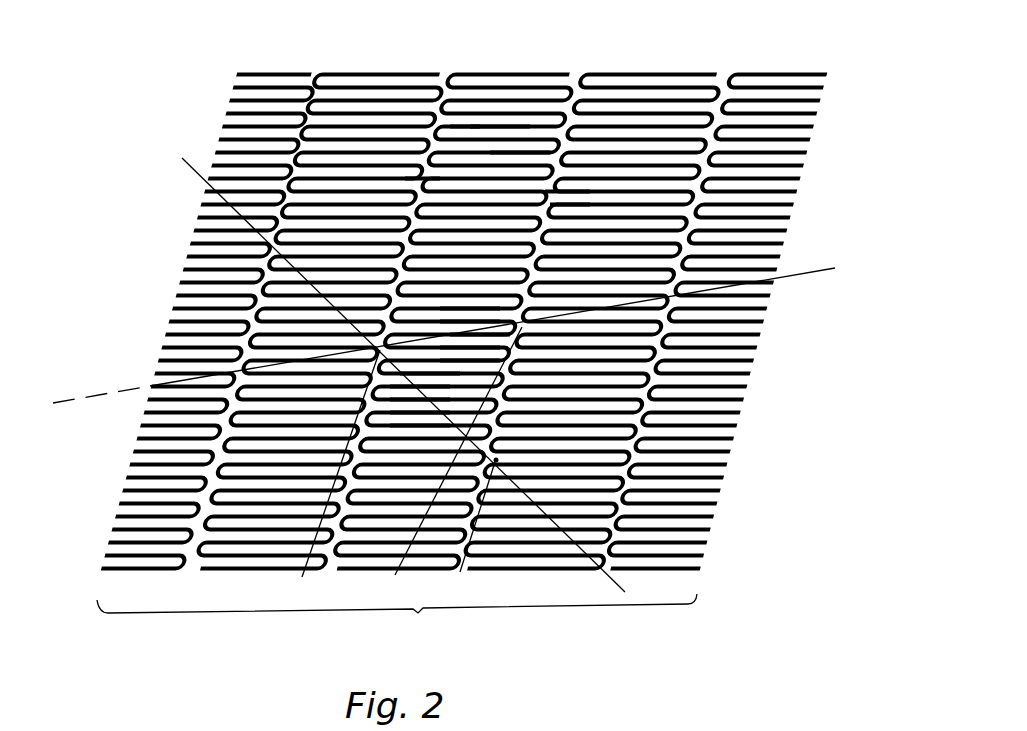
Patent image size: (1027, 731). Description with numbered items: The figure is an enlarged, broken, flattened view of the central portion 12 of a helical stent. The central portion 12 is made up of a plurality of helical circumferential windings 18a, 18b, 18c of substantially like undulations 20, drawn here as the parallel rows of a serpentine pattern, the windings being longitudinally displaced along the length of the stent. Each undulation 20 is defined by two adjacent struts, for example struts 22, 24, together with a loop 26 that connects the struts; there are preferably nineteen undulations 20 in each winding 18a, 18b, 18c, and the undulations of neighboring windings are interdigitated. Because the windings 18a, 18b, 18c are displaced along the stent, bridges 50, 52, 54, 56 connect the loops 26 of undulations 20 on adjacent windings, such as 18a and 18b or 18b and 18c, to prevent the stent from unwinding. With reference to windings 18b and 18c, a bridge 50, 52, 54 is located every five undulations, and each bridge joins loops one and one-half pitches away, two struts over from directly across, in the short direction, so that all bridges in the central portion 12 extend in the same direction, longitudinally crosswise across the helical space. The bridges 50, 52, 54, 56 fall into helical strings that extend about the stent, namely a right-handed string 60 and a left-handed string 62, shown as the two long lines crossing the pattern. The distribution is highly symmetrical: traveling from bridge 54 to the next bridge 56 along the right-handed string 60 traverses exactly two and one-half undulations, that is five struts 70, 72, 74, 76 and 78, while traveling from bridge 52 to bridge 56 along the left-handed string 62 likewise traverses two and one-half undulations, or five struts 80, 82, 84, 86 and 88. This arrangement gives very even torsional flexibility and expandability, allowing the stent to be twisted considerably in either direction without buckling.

The central portion 12 is at (462, 360).
The circumferential winding 18a is at (353, 60).
The circumferential winding 18b is at (556, 56).
The circumferential winding 18c is at (639, 56).
The undulation 20 is at (435, 190).
The strut 22 is at (492, 132).
The strut 24 is at (512, 147).
The loop 26 is at (463, 133).
The bridge 50 is at (567, 200).
The bridge 52 is at (449, 464).
The bridge 54 is at (473, 530).
The bridge 56 is at (334, 479).
The right-handed string 60 is at (182, 158).
The left-handed string 62 is at (92, 399).
The strut 70 is at (420, 432).
The strut 72 is at (420, 418).
The strut 74 is at (420, 408).
The strut 76 is at (420, 395).
The strut 78 is at (430, 382).
The strut 80 is at (470, 315).
The strut 82 is at (470, 327).
The strut 84 is at (505, 331).
The strut 86 is at (470, 356).
The strut 88 is at (470, 367).